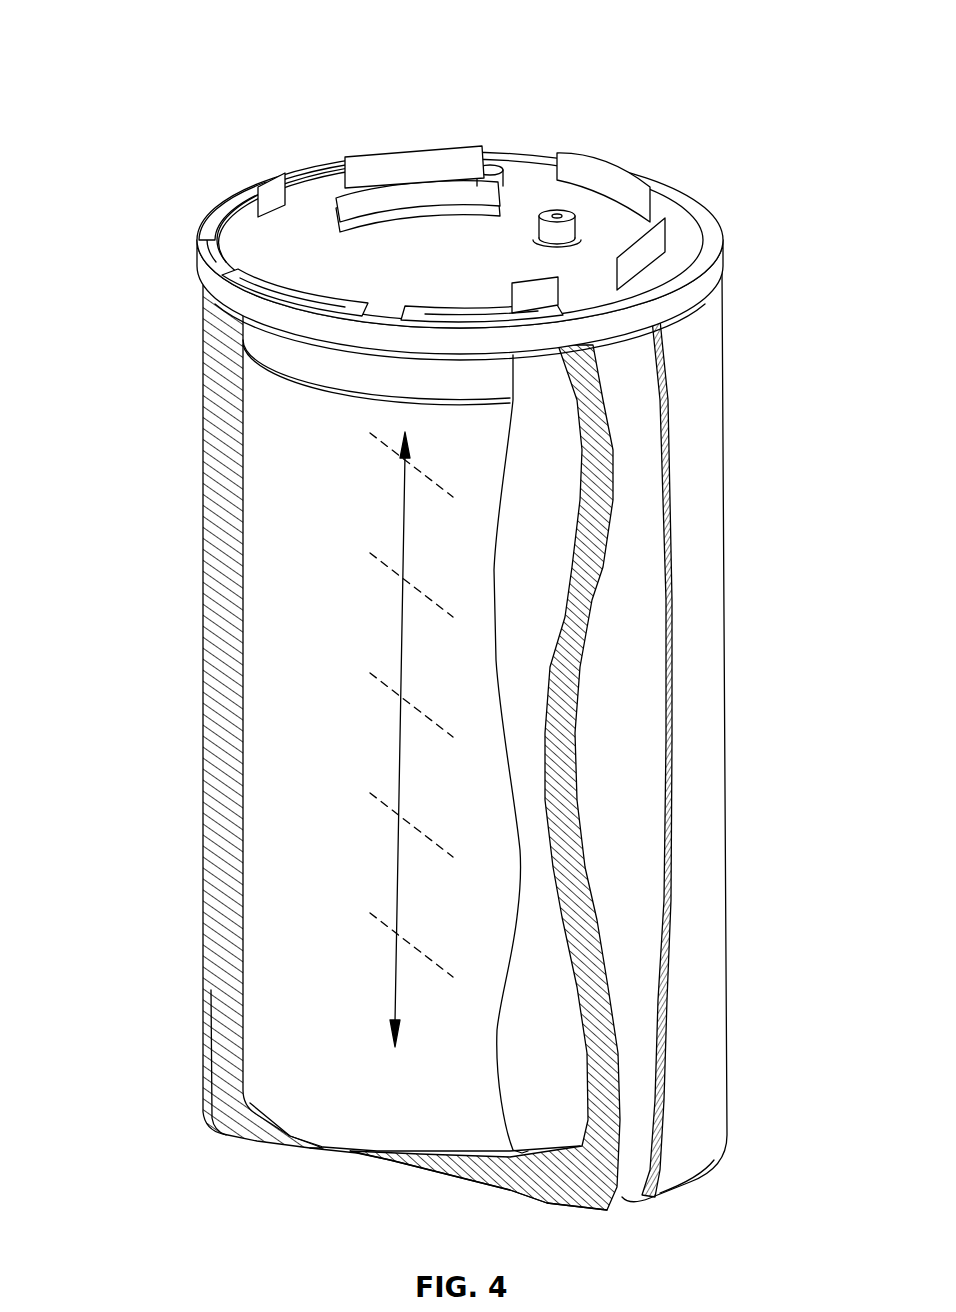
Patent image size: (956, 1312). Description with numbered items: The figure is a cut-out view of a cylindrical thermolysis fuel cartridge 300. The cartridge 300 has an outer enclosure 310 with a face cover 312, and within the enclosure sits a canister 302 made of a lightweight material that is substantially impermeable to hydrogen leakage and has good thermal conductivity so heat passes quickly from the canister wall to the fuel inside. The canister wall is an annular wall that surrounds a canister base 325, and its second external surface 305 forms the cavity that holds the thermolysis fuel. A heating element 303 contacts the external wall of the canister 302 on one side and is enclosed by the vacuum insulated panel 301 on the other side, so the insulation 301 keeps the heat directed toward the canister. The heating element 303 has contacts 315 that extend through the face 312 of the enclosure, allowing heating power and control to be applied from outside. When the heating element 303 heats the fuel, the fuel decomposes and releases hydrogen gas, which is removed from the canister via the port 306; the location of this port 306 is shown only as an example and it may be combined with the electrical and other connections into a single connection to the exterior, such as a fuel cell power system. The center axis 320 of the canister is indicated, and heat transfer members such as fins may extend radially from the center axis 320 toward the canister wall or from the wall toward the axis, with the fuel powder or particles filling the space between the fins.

The thermolysis cartridge 300 is at (115, 40).
The vacuum insulated panel 301 is at (620, 739).
The canister 302 is at (290, 497).
The heating element 303 is at (525, 625).
The second external surface 305 is at (331, 1066).
The port 306 is at (562, 232).
The outer enclosure 310 is at (707, 862).
The face cover 312 is at (427, 269).
The contacts 315 is at (457, 145).
The center axis 320 is at (385, 760).
The canister base 325 is at (367, 1148).